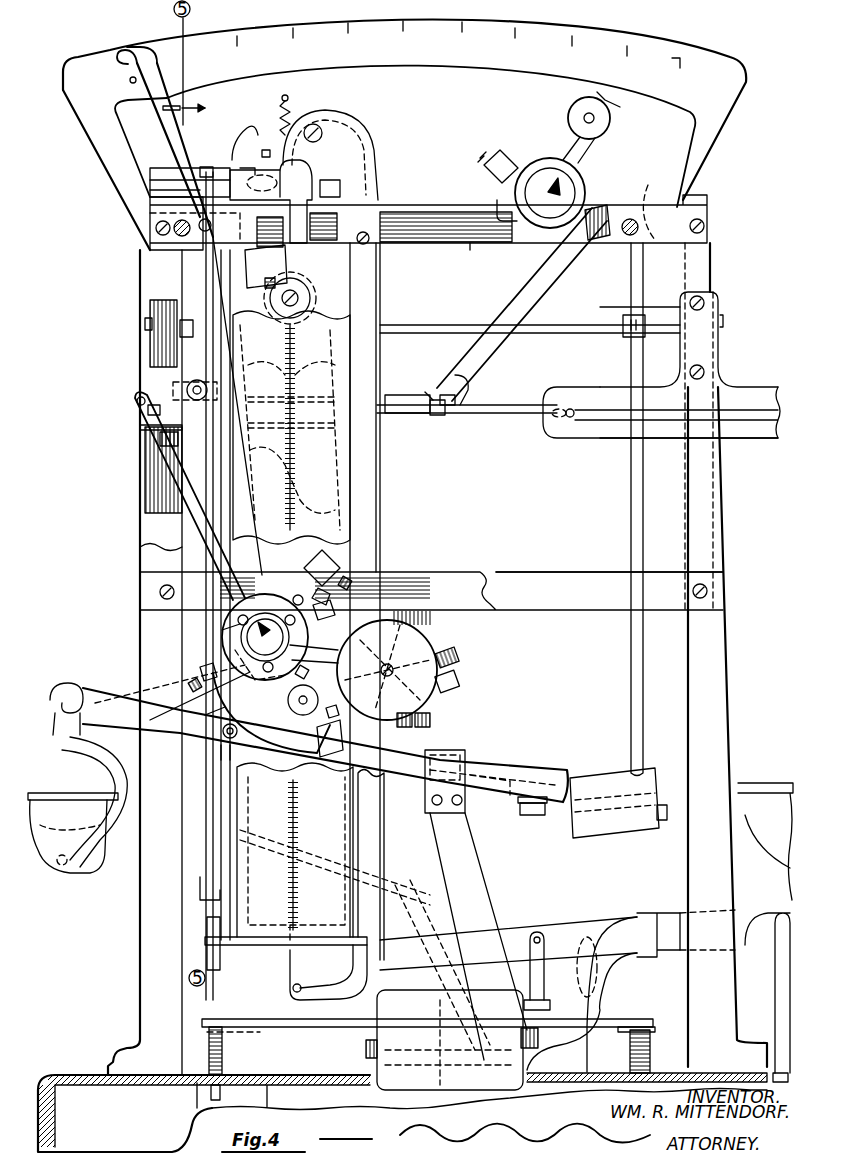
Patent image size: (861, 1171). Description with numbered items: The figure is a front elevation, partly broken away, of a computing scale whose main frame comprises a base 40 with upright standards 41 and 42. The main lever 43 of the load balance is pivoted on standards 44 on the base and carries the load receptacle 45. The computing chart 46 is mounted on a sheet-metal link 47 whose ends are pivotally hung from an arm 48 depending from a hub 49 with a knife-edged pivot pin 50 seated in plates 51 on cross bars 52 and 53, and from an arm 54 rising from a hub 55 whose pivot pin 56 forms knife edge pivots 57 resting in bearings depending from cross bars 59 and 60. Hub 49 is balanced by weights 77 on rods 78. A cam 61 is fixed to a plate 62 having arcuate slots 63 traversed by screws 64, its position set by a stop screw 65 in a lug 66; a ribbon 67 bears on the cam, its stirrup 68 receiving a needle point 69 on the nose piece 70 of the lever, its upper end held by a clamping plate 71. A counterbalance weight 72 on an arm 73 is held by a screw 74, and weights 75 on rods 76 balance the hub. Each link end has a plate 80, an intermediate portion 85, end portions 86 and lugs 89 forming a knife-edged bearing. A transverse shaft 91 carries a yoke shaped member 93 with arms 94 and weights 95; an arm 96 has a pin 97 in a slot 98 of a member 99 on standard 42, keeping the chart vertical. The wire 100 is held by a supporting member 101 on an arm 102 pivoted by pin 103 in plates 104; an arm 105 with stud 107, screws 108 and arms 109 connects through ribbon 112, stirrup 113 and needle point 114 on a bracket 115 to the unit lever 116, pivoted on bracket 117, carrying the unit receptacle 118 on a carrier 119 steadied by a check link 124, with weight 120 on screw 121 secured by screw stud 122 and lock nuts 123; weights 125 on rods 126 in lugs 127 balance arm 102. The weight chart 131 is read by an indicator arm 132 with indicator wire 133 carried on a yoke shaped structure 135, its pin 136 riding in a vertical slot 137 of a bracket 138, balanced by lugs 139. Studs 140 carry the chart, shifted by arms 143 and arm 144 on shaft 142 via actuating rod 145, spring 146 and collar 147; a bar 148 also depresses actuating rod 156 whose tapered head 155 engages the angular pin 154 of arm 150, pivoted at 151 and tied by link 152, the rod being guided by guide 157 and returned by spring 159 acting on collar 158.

The base 40 is at (75, 1075).
The upright standard 41 is at (140, 940).
The upright standard 42 is at (727, 702).
The main lever 43 is at (571, 925).
The standards 44 is at (775, 968).
The load receptacle 45 is at (775, 850).
The chart 46 is at (355, 475).
The link 47 is at (393, 395).
The arm 48 is at (505, 290).
The hub 49 is at (582, 180).
The pivot pin 50 is at (575, 193).
The plates 51 is at (497, 205).
The cross bar 52 is at (466, 255).
The cross bar 53 is at (618, 240).
The arm 54 is at (175, 470).
The hub 55 is at (265, 637).
The pivot pin 56 is at (267, 637).
The knife edge pivots 57 is at (265, 638).
The cross bar 59 is at (449, 572).
The cross bar 60 is at (519, 573).
The cam 61 is at (271, 713).
The plate 62 is at (185, 708).
The arcuate slots 63 is at (314, 672).
The screws 64 is at (240, 624).
The stop screw 65 is at (300, 691).
The lug 66 is at (318, 697).
The ribbon 67 is at (213, 798).
The stirrup 68 is at (205, 877).
The needle point 69 is at (222, 965).
The nose piece 70 is at (277, 946).
The clamping plate 71 is at (312, 572).
The weight 72 is at (428, 645).
The arm 73 is at (325, 650).
The screw 74 is at (374, 668).
The weights 75 is at (200, 672).
The rods 76 is at (270, 666).
The weights 77 is at (568, 116).
The rods 78 is at (490, 150).
The plate 80 is at (135, 408).
The intermediate portion 85 is at (140, 427).
The end portions 86 is at (172, 440).
The lugs 89 is at (148, 433).
The transverse shaft 91 is at (262, 412).
The yoke shaped member 93 is at (312, 355).
The arms 94 is at (310, 298).
The weights 95 is at (305, 285).
The arm 96 is at (492, 414).
The pin 97 is at (569, 420).
The slot 98 is at (605, 440).
The member 99 is at (670, 439).
The wire 100 is at (297, 957).
The supporting member 101 is at (382, 355).
The arm 102 is at (295, 108).
The pivot pin 103 is at (322, 185).
The plates 104 is at (345, 200).
The arm 105 is at (201, 101).
The stud 107 is at (269, 201).
The screws 108 is at (266, 150).
The arms 109 is at (245, 150).
The ribbon 112 is at (258, 552).
The stirrup 113 is at (246, 734).
The needle point 114 is at (202, 719).
The bracket 115 is at (205, 750).
The main lever 116 is at (495, 756).
The bracket 117 is at (476, 905).
The unit receptacle 118 is at (57, 793).
The carrier 119 is at (104, 833).
The weight 120 is at (598, 830).
The screw 121 is at (662, 820).
The screw stud 122 is at (535, 815).
The lock nuts 123 is at (520, 805).
The check link 124 is at (392, 912).
The weights 125 is at (396, 233).
The rods 126 is at (278, 280).
The lugs 127 is at (266, 266).
The weight chart 131 is at (432, 62).
The indicator arm 132 is at (175, 160).
The indicator wire 133 is at (140, 93).
The yoke shaped structure 135 is at (285, 490).
The pin 136 is at (458, 675).
The vertical slot 137 is at (425, 718).
The bracket 138 is at (432, 724).
The lugs 139 is at (458, 655).
The studs 140 is at (150, 240).
The shaft 142 is at (542, 334).
The arms 143 is at (165, 303).
The arm 144 is at (623, 330).
The actuating rod 145 is at (631, 515).
The spring 146 is at (650, 1035).
The collar 147 is at (634, 1031).
The bar 148 is at (610, 1019).
The arm 150 is at (150, 180).
The pivot 151 is at (245, 168).
The link 152 is at (150, 172).
The angular pin 154 is at (150, 190).
The tapered head 155 is at (206, 167).
The actuating rod 156 is at (206, 278).
The guide 157 is at (212, 225).
The collar 158 is at (205, 1024).
The spring 159 is at (209, 1050).